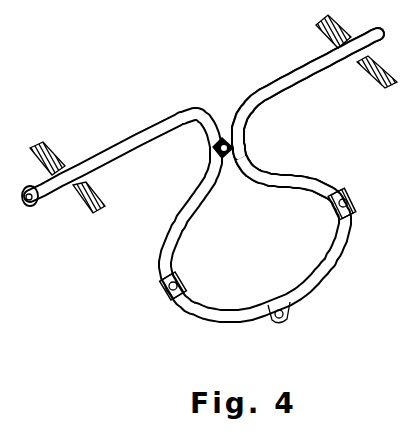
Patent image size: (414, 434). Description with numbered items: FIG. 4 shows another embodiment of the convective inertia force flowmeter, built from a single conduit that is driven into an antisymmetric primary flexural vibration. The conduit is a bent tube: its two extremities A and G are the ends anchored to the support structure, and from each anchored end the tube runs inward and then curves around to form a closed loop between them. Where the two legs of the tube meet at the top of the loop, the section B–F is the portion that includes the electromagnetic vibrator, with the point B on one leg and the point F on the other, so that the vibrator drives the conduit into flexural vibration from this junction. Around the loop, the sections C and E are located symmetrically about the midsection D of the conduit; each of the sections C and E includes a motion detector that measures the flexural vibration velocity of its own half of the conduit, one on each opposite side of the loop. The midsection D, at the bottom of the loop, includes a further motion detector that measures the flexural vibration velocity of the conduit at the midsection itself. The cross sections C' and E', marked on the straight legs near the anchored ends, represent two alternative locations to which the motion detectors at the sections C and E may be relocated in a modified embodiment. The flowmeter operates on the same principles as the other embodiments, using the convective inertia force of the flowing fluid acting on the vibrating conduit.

The extremity of the conduit A is at (77, 162).
The electromagnetic vibrator section end B is at (212, 148).
The motion detector section C is at (141, 300).
The alternative motion detector cross section C' is at (204, 175).
The midsection of the conduit D is at (283, 305).
The motion detector section E is at (367, 191).
The alternative motion detector cross section E' is at (295, 94).
The electromagnetic vibrator section end F is at (252, 143).
The extremity of the conduit G is at (335, 52).